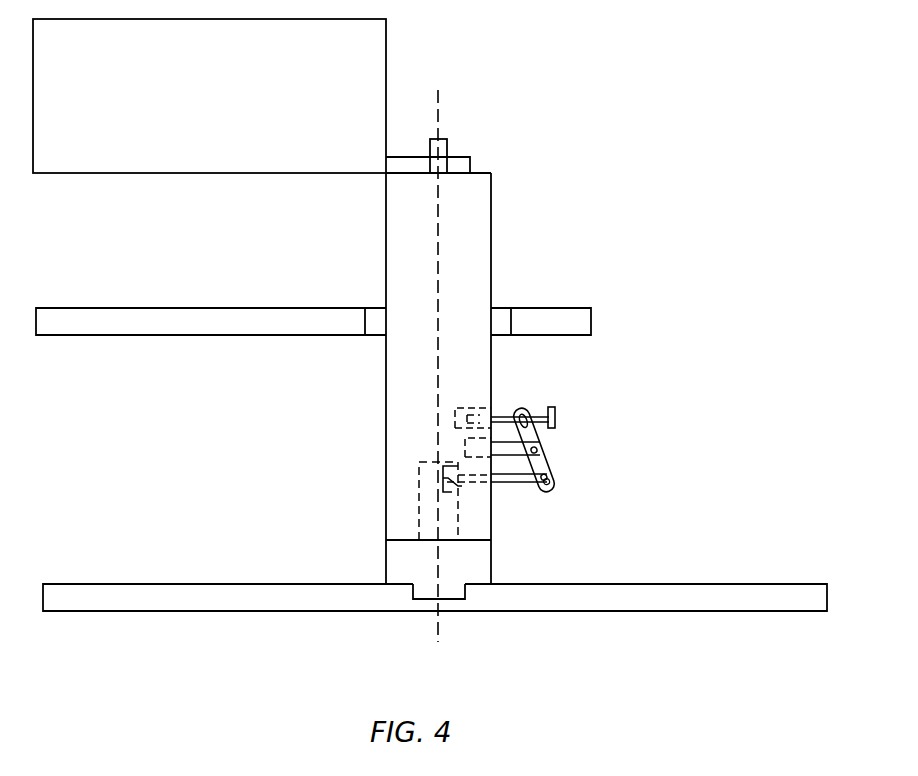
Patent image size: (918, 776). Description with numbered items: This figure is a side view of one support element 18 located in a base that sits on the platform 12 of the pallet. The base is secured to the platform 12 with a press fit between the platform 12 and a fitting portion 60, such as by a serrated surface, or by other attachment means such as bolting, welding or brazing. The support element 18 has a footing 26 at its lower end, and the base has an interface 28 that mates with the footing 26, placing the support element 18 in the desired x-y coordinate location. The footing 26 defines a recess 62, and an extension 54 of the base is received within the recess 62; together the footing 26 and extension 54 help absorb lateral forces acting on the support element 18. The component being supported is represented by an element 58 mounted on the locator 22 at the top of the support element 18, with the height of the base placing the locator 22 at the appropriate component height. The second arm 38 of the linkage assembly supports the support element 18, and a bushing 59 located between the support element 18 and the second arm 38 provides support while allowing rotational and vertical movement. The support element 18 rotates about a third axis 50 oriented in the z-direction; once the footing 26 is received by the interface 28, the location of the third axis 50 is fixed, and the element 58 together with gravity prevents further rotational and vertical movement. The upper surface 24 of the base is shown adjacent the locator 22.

The platform 12 is at (153, 598).
The support element 18 is at (386, 272).
The locator 22 is at (447, 150).
The top surface 24 is at (478, 174).
The footing 26 is at (503, 515).
The interface 28 is at (368, 540).
The second arm 38 is at (168, 335).
The third axis 50 is at (441, 111).
The extension 54 is at (448, 521).
The element 58 is at (223, 113).
The bushing 59 is at (498, 335).
The fitting portion 60 is at (452, 590).
The recess 62 is at (420, 473).